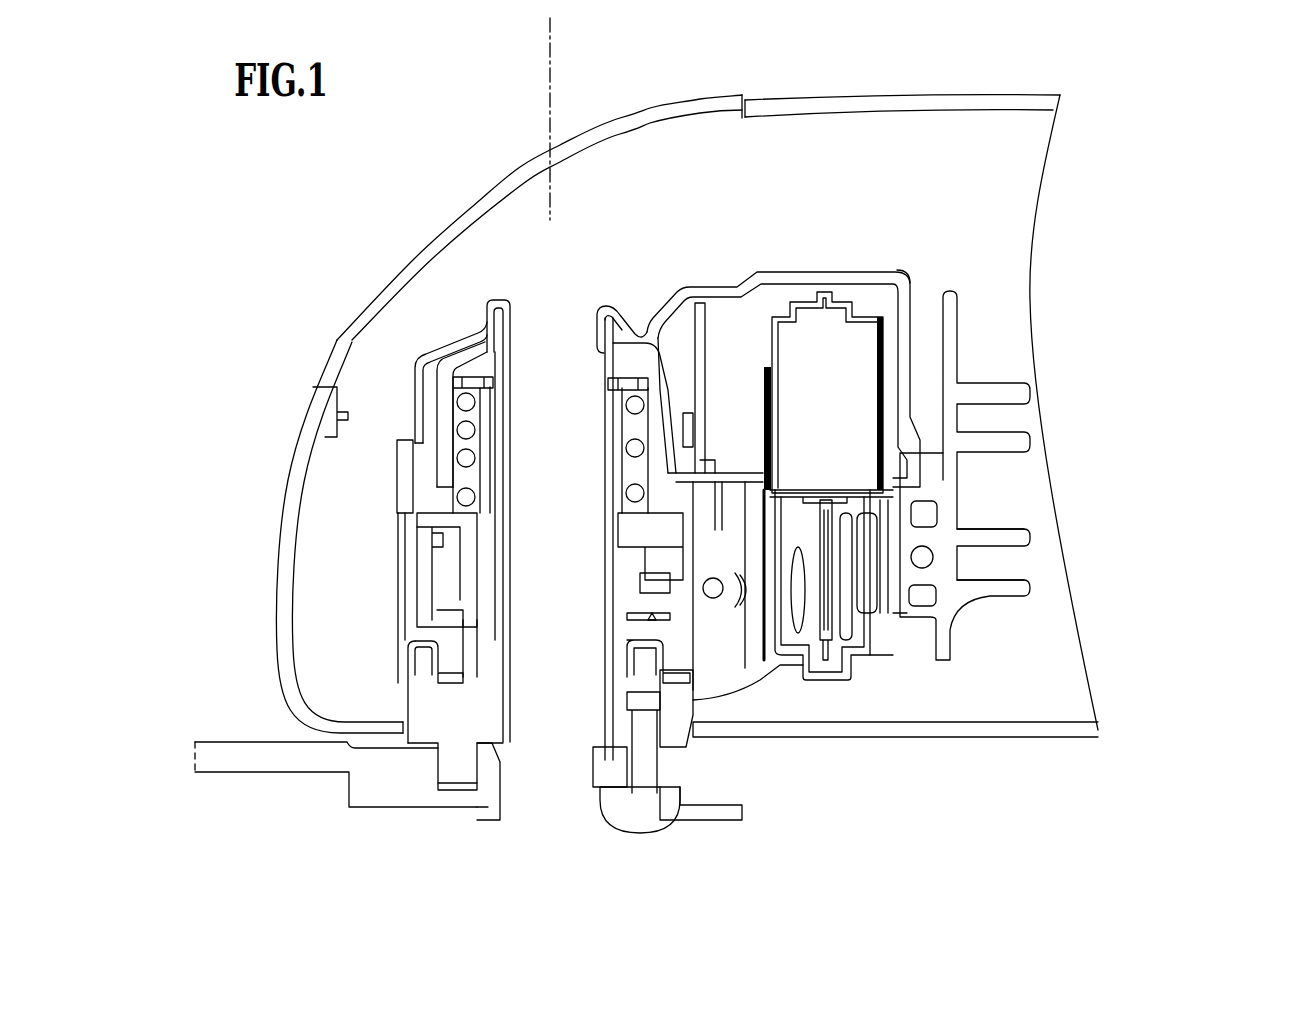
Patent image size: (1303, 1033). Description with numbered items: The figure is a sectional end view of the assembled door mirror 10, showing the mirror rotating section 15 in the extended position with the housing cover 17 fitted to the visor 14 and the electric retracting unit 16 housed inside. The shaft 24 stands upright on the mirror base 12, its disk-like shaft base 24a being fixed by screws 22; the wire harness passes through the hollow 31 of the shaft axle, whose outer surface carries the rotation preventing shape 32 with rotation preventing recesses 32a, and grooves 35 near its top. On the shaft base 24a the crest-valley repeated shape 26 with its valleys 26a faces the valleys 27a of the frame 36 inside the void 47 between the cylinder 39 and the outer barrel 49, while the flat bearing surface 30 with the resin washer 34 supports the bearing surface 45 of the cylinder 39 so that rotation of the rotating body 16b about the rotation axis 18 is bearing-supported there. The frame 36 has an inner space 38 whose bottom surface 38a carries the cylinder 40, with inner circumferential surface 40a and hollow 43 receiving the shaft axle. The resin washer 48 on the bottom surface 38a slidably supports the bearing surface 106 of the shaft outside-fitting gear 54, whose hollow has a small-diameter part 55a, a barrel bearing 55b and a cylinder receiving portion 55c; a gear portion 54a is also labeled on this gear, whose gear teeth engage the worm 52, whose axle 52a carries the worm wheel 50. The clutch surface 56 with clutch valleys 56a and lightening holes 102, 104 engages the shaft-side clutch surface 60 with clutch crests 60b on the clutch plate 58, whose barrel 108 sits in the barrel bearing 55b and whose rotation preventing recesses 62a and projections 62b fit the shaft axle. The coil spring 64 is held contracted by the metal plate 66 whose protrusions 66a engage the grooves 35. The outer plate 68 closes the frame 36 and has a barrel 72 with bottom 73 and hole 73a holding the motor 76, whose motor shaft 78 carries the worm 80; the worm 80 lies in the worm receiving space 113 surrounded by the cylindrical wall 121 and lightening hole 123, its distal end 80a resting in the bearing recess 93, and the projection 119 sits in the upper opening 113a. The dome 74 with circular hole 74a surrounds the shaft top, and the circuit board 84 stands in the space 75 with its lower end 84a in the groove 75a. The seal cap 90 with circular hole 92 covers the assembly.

The door mirror 10 is at (1227, 35).
The mirror base 12 is at (218, 748).
The visor 14 is at (292, 440).
The mirror rotating section 15 is at (947, 60).
The electric retracting unit 16 is at (901, 232).
The rotating body 16b is at (916, 262).
The housing cover 17 is at (775, 107).
The rotation axis 18 is at (552, 47).
The screws 22 is at (643, 790).
The shaft 24 is at (510, 365).
The shaft base 24a is at (672, 795).
The crest-valley repeated shape 26 is at (405, 655).
The valley 26a is at (705, 700).
The valley 27a is at (422, 652).
The bearing surface 30 is at (468, 610).
The hollow 31 is at (550, 318).
The rotation preventing shape 32 is at (420, 435).
The rotation preventing recess 32a is at (604, 432).
The resin washer 34 is at (470, 675).
The grooves 35 is at (613, 398).
The frame 36 is at (1029, 491).
The inner space 38 is at (427, 500).
The bottom surface 38a is at (680, 612).
The cylinder 39 is at (447, 660).
The cylinder 40 is at (450, 598).
The inner circumferential surface 40a is at (478, 628).
The hollow 43 is at (612, 640).
The bearing surface 45 is at (447, 685).
The void 47 is at (413, 640).
The resin washer 48 is at (660, 618).
The outer barrel 49 is at (397, 660).
The worm wheel 50 is at (822, 600).
The worm 52 is at (720, 595).
The axle 52a is at (742, 608).
The shaft outside-fitting gear 54 is at (417, 572).
The spring end 54a is at (410, 580).
The small-diameter part 55a is at (485, 568).
The barrel bearing 55b is at (480, 523).
The cylinder receiving portion 55c is at (497, 640).
The shaft outside-fitting gear-side clutch surface 56 is at (415, 560).
The clutch valley 56a is at (672, 580).
The clutch plate 58 is at (653, 520).
The shaft-side clutch surface 60 is at (425, 515).
The clutch crest 60b is at (500, 598).
The rotation preventing recess 62a is at (470, 550).
The rotation preventing projection 62b is at (493, 570).
The coil spring 64 is at (310, 440).
The metal plate 66 is at (465, 425).
The protrusions 66a is at (488, 378).
The outer plate 68 is at (427, 352).
The barrel 72 is at (755, 350).
The bottom 73 is at (783, 480).
The hole 73a is at (820, 500).
The dome 74 is at (638, 358).
The circular hole 74a is at (590, 343).
The space 75 is at (760, 380).
The groove 75a is at (700, 468).
The motor 76 is at (832, 393).
The motor shaft 78 is at (850, 560).
The worm 80 is at (880, 517).
The distal end 80a is at (830, 607).
The circuit board 84 is at (700, 330).
The lower end 84a is at (704, 460).
The seal cap 90 is at (437, 372).
The circular hole 92 is at (510, 335).
The bearing recess 93 is at (838, 660).
The lightening hole 102 is at (427, 543).
The lightening hole 104 is at (650, 538).
The bearing surface 106 is at (493, 615).
The barrel 108 is at (477, 543).
The worm receiving space 113 is at (1030, 588).
The upper opening 113a is at (1029, 538).
The projection 119 is at (930, 470).
The cylindrical wall 121 is at (934, 557).
The lightening hole 123 is at (937, 510).